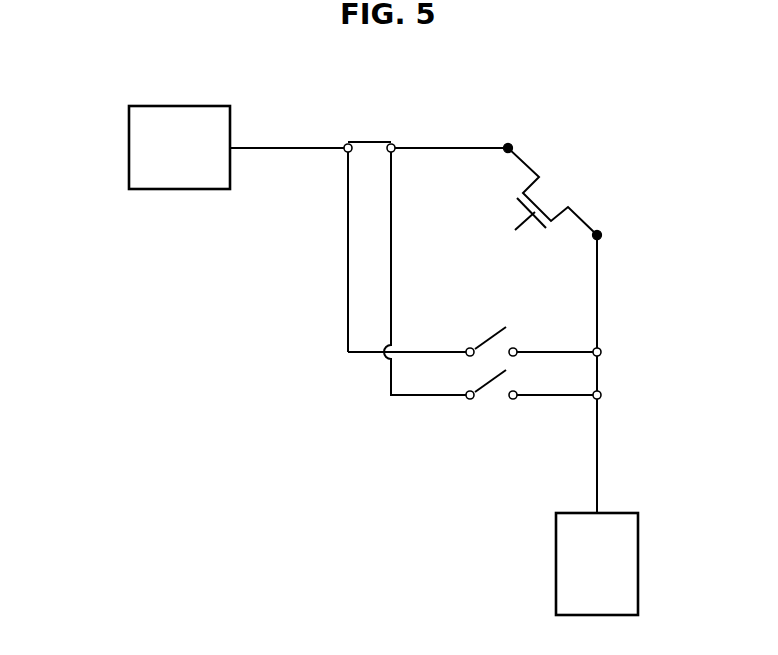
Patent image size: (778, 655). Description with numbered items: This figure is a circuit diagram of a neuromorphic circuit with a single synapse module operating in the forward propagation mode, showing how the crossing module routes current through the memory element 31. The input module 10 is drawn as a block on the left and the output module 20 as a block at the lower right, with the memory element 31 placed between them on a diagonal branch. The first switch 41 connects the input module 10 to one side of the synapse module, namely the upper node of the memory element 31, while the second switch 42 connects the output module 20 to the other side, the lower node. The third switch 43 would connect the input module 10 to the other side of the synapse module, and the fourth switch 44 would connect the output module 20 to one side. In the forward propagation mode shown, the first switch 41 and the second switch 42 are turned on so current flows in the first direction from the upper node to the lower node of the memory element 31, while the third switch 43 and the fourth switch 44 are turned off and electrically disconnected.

The input module 10 is at (129, 147).
The output module 20 is at (638, 562).
The memory element 31 is at (565, 182).
The first switch 41 is at (370, 140).
The second switch 42 is at (601, 373).
The third switch 43 is at (490, 338).
The fourth switch 44 is at (492, 382).